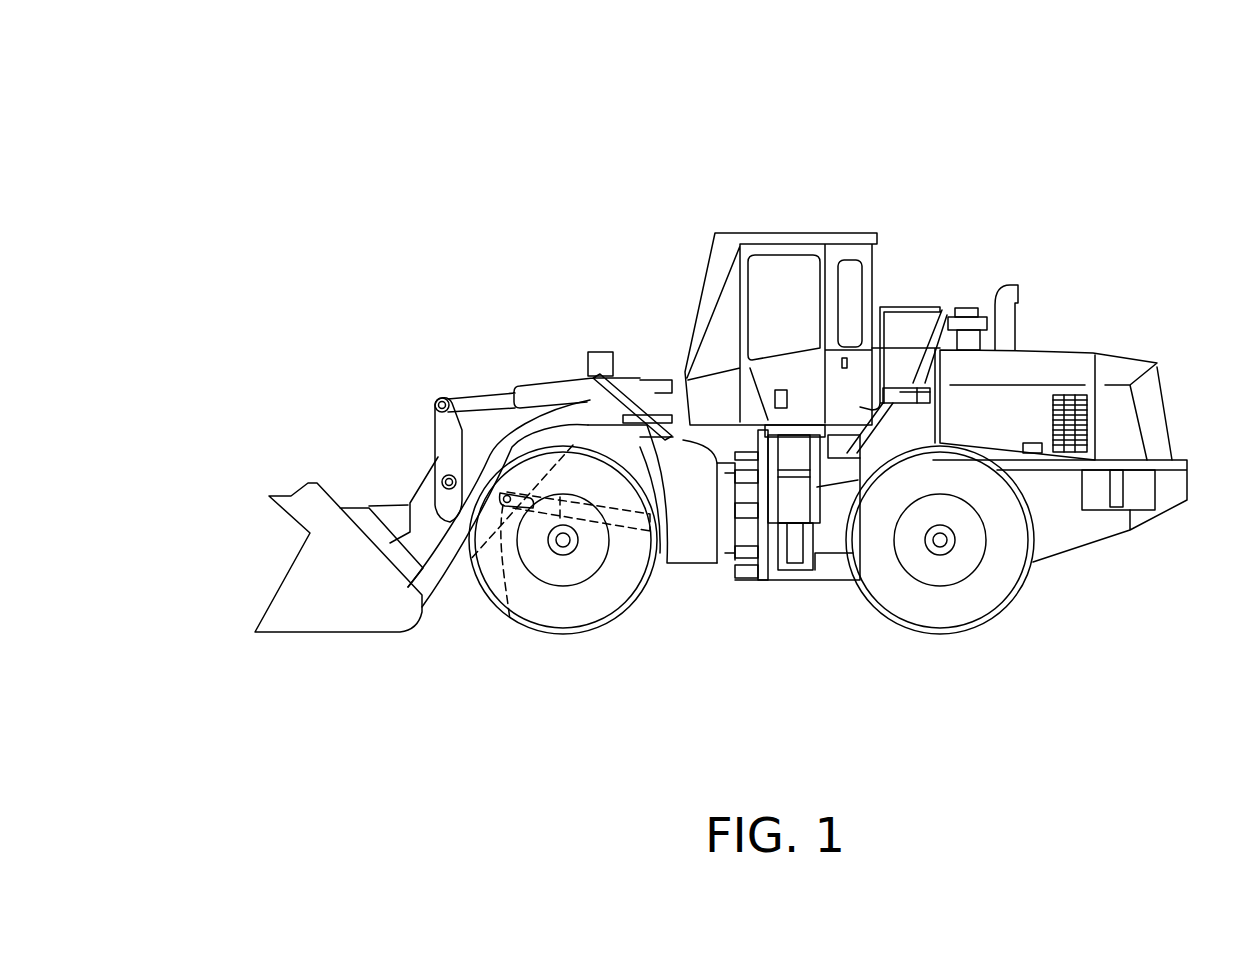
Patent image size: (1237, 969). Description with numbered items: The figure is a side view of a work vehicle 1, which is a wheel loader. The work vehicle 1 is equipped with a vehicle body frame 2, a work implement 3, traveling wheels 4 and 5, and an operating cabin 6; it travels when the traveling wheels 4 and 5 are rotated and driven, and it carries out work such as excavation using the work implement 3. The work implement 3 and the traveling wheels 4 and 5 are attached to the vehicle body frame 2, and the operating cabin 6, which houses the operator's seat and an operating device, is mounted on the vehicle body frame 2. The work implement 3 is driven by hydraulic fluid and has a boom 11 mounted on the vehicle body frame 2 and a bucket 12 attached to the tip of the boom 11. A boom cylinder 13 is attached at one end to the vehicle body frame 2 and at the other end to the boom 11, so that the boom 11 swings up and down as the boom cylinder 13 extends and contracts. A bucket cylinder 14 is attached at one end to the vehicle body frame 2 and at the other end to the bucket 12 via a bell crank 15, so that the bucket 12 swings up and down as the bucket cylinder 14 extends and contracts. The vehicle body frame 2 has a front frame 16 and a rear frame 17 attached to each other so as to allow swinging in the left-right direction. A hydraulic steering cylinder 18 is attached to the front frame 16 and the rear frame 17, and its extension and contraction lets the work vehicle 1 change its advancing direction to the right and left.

The work vehicle 1 is at (998, 149).
The vehicle body frame 2 is at (777, 596).
The work implement 3 is at (318, 459).
The traveling wheel 4 is at (575, 618).
The traveling wheel 5 is at (952, 617).
The operating cabin 6 is at (840, 233).
The boom 11 is at (475, 475).
The bucket 12 is at (302, 568).
The boom cylinder 13 is at (510, 620).
The bucket cylinder 14 is at (526, 385).
The bell crank 15 is at (437, 455).
The front frame 16 is at (677, 555).
The rear frame 17 is at (828, 568).
The steering cylinder 18 is at (727, 517).